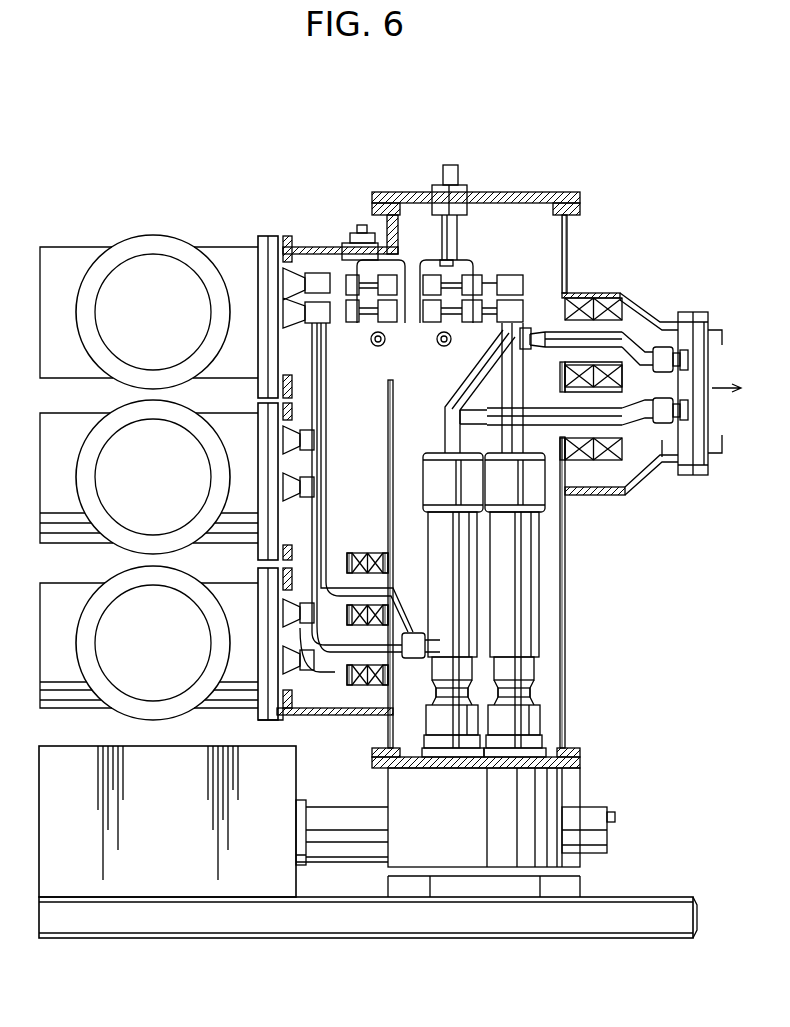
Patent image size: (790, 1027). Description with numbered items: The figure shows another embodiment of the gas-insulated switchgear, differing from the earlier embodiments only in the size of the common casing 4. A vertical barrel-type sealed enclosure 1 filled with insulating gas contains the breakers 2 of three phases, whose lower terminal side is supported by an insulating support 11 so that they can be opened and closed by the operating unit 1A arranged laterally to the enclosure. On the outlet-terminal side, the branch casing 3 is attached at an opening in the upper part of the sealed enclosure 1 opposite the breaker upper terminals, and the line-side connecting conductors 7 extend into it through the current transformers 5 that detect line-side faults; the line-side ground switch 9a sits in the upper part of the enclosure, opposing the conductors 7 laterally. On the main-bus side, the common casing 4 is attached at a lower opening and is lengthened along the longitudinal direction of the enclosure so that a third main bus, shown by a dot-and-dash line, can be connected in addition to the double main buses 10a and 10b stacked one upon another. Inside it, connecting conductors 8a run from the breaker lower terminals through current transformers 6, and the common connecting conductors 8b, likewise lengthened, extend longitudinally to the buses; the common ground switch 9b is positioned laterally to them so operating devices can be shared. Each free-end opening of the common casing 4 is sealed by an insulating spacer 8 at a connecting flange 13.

The sealed enclosure 1 is at (565, 625).
The operating unit 1A is at (245, 885).
The breakers 2 is at (545, 555).
The branch casing 3 is at (610, 492).
The common casing 4 is at (334, 715).
The current transformers 5 is at (600, 298).
The current transformers 6 is at (365, 690).
The line-side connecting conductors 7 is at (660, 335).
The insulating spacer 8 is at (288, 714).
The connecting conductors 8a is at (338, 588).
The common connecting conductors 8b is at (326, 472).
The line-side ground switch 9a is at (470, 270).
The common ground switch 9b is at (350, 268).
The main bus 10a is at (135, 432).
The main bus 10b is at (130, 608).
The insulating support 11 is at (525, 697).
The connecting flanges 13 is at (283, 245).